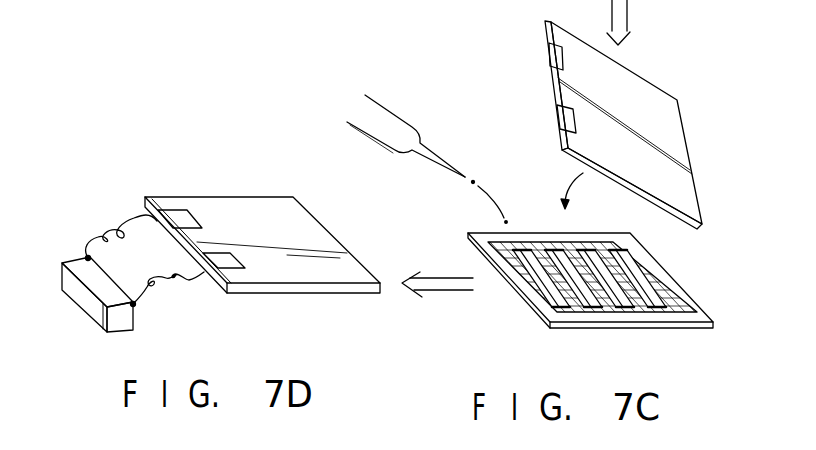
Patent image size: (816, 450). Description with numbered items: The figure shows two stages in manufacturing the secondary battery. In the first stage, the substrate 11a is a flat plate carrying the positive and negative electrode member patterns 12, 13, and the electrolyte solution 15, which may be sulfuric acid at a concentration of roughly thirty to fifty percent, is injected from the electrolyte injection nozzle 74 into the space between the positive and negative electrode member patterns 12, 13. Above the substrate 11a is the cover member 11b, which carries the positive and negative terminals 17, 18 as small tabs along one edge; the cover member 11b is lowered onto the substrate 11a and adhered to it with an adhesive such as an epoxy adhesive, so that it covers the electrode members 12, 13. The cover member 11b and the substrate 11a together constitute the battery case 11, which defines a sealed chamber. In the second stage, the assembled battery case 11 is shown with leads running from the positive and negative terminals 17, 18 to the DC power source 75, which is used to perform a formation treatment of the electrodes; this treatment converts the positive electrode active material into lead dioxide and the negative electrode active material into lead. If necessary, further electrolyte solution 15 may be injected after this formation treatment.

In FIG. 7D, the battery case 11 is at (313, 223).
In FIG. 7C, the substrate 11a is at (702, 317).
In FIG. 7C, the cover member 11b is at (637, 90).
In FIG. 7C, the positive electrode member 12 is at (527, 252).
In FIG. 7C, the negative electrode member 13 is at (603, 308).
In FIG. 7C, the electrolyte solution 15 is at (488, 187).
In FIG. 7D, the positive terminal 17 is at (178, 212).
In FIG. 7C, the positive terminal 17 is at (547, 53).
In FIG. 7D, the negative terminal 18 is at (232, 266).
In FIG. 7C, the negative terminal 18 is at (557, 116).
In FIG. 7C, the electrolyte injection nozzle 74 is at (395, 115).
In FIG. 7D, the DC power source 75 is at (85, 307).